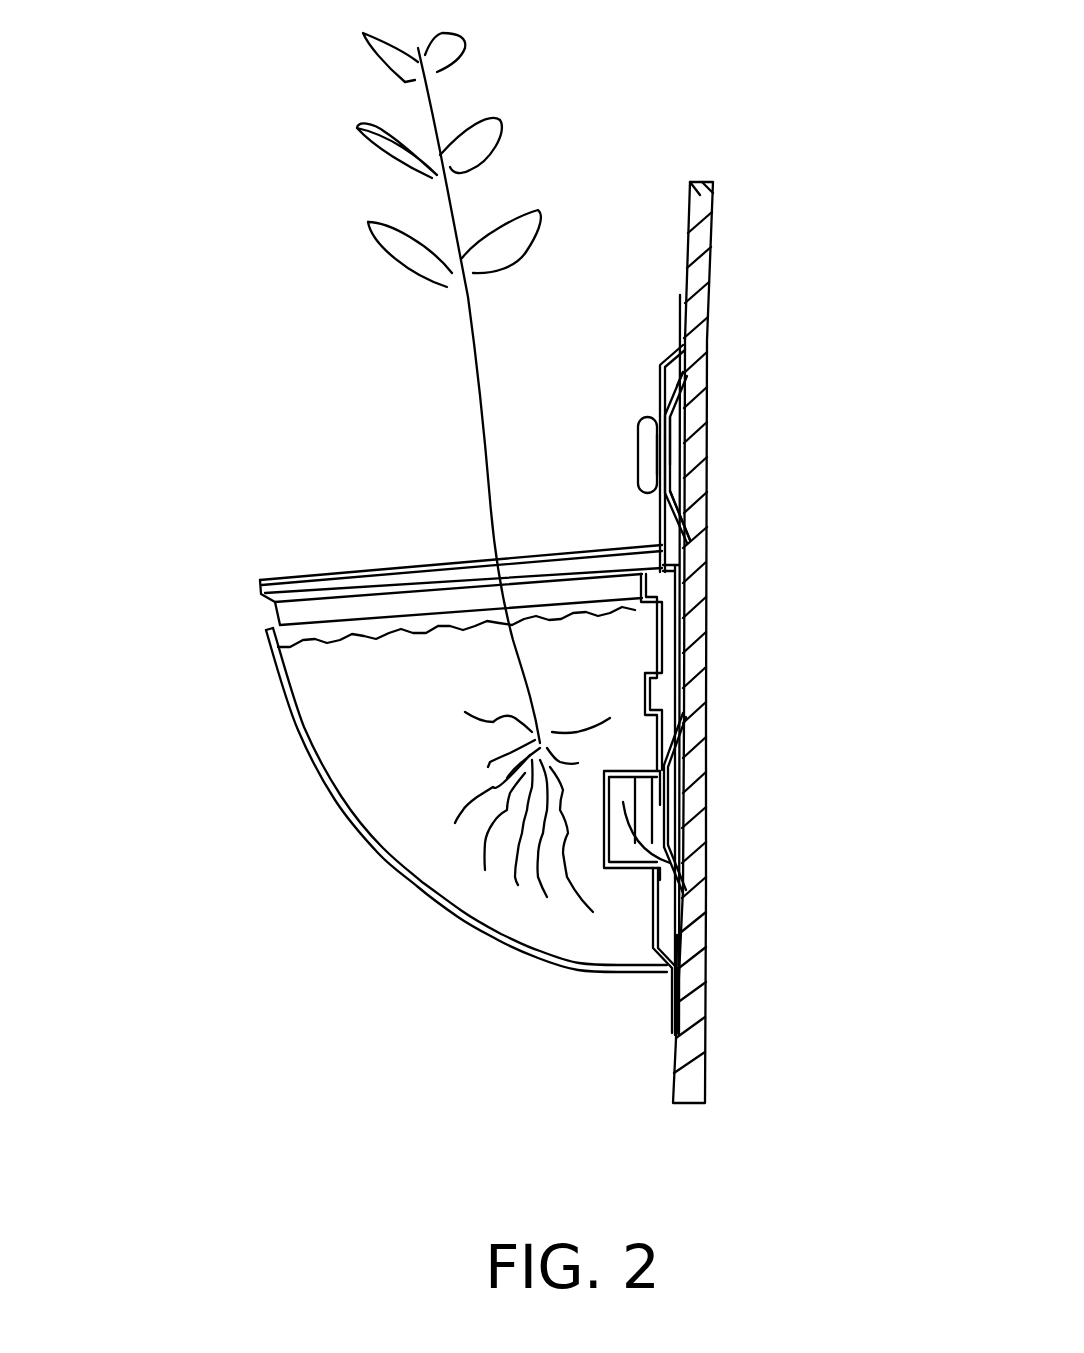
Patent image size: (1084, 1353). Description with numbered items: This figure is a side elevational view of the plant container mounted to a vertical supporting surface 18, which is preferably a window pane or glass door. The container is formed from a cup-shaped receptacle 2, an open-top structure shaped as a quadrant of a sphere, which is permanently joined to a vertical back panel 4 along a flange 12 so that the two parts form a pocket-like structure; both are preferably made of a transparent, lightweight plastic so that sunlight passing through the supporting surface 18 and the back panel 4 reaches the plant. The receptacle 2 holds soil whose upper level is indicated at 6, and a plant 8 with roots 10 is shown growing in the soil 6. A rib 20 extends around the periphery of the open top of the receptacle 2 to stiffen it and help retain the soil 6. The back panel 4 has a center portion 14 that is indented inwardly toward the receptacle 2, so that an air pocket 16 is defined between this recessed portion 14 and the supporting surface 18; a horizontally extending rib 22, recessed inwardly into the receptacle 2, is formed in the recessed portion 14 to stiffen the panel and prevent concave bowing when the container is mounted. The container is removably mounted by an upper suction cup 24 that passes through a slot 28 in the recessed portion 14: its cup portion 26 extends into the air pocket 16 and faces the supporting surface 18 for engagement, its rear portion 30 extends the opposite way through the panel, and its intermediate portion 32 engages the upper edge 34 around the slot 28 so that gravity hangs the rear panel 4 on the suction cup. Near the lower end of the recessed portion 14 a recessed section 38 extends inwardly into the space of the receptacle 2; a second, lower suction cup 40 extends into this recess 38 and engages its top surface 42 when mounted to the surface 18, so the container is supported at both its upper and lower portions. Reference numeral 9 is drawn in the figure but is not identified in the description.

The cup-shaped receptacle 2 is at (342, 808).
The back panel 4 is at (682, 322).
The soil 6 is at (418, 628).
The plant 8 is at (453, 217).
The lower bracket portion 9 is at (687, 940).
The roots 10 is at (530, 888).
The flange 12 is at (665, 1007).
The center portion 14 is at (658, 392).
The air pocket 16 is at (672, 362).
The vertical supporting surface 18 is at (712, 223).
The rib 20 is at (275, 620).
The horizontally extending rib 22 is at (641, 578).
The upper suction cup 24 is at (690, 508).
The cup portion 26 is at (688, 443).
The slot 28 is at (680, 430).
The rear portion 30 is at (638, 430).
The intermediate portion 32 is at (638, 449).
The upper edge 34 is at (678, 375).
The recessed section 38 is at (605, 818).
The lower suction cup 40 is at (687, 758).
The top surface 42 is at (677, 863).